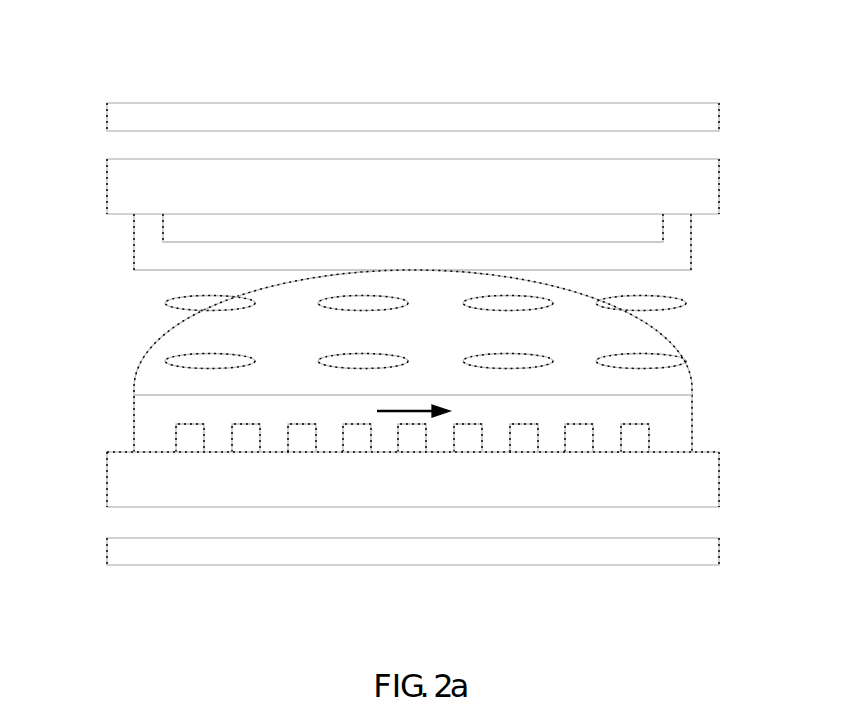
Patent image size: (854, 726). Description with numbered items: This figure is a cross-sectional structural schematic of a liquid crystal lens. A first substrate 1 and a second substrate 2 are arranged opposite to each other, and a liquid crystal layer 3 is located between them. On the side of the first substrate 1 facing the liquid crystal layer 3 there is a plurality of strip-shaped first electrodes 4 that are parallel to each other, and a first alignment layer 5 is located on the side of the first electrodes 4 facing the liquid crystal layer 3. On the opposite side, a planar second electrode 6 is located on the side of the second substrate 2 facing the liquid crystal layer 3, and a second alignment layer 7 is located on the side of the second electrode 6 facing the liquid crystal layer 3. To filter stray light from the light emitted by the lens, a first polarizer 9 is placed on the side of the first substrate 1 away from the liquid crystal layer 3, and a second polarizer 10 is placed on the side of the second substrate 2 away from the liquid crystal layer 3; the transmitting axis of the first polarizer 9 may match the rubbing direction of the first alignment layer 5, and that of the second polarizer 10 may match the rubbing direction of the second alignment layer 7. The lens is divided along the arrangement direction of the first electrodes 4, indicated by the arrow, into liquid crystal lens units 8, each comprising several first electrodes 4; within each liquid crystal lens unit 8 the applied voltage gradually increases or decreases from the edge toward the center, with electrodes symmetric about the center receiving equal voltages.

The first substrate 1 is at (697, 478).
The second substrate 2 is at (696, 187).
The liquid crystal layer 3 is at (469, 332).
The first electrodes 4 is at (367, 421).
The first alignment layer 5 is at (461, 394).
The second electrode 6 is at (363, 246).
The second alignment layer 7 is at (467, 258).
The liquid crystal lens unit 8 is at (167, 334).
The first polarizer 9 is at (442, 587).
The second polarizer 10 is at (420, 73).